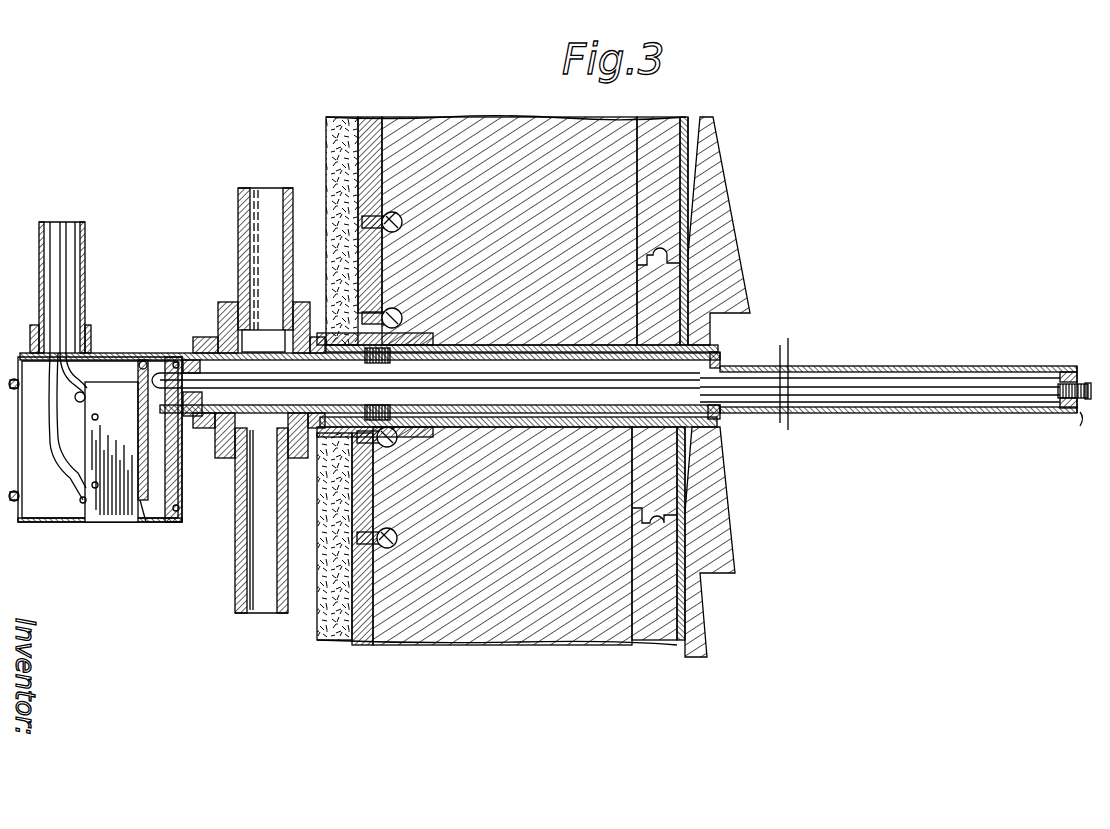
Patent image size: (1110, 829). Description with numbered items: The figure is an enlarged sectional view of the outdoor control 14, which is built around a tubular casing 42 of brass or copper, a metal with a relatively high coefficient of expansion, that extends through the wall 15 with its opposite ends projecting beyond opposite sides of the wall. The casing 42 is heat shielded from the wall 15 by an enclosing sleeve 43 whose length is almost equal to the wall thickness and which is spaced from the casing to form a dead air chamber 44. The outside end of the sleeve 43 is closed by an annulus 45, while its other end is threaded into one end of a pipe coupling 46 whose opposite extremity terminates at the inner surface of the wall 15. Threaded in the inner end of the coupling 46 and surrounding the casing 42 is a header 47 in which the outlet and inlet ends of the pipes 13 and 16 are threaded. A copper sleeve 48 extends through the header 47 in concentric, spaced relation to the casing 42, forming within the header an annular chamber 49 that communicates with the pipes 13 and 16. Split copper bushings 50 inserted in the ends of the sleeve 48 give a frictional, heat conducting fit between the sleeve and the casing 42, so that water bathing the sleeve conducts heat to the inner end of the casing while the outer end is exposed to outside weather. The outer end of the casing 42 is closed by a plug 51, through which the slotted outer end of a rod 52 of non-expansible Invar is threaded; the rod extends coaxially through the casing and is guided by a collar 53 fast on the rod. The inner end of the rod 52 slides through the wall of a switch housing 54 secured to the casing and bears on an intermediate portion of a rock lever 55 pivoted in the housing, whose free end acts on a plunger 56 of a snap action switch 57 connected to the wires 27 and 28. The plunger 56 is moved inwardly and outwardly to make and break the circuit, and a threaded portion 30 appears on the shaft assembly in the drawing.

The pipe 13 is at (235, 572).
The outdoor control 14 is at (621, 370).
The wall 15 is at (722, 191).
The pipe 16 is at (240, 218).
The wire 27 is at (52, 222).
The wire 28 is at (70, 222).
The threaded portion 30 is at (361, 384).
The tubular casing 42 is at (872, 368).
The enclosing sleeve 43 is at (545, 348).
The dead air chamber 44 is at (482, 350).
The annulus 45 is at (722, 360).
The pipe coupling 46 is at (418, 333).
The header 47 is at (196, 350).
The copper sleeve 48 is at (258, 330).
The annular chamber 49 is at (263, 341).
The split copper bushings 50 is at (190, 352).
The plug 51 is at (1078, 415).
The rod 52 is at (1015, 388).
The collar 53 is at (728, 412).
The switch housing 54 is at (182, 497).
The rock lever 55 is at (148, 495).
The plunger 56 is at (140, 522).
The snap action switch 57 is at (105, 507).